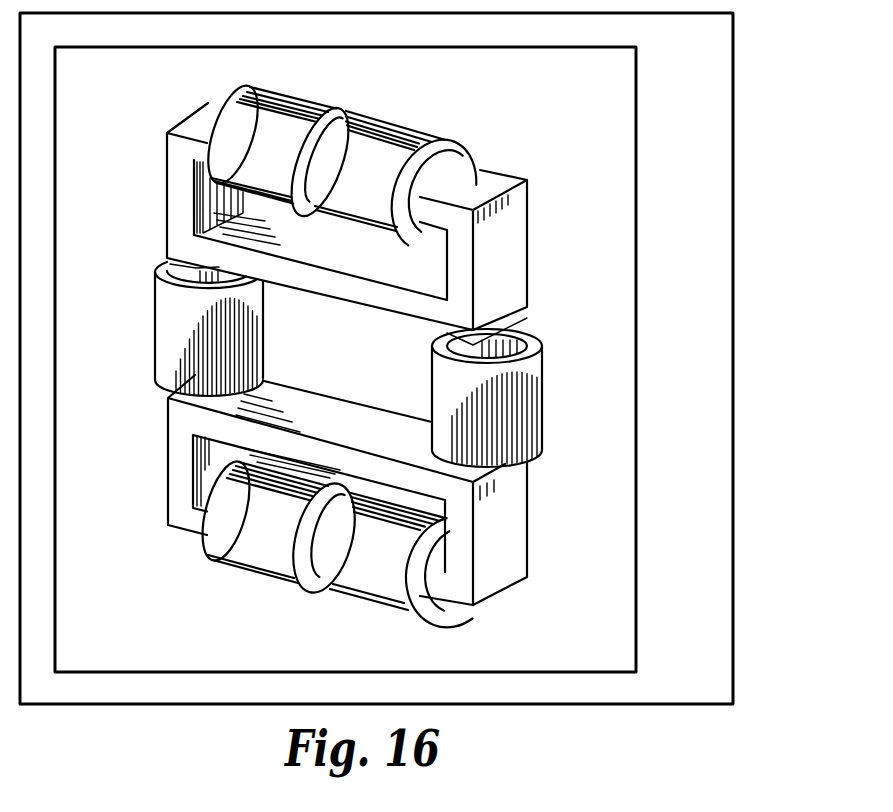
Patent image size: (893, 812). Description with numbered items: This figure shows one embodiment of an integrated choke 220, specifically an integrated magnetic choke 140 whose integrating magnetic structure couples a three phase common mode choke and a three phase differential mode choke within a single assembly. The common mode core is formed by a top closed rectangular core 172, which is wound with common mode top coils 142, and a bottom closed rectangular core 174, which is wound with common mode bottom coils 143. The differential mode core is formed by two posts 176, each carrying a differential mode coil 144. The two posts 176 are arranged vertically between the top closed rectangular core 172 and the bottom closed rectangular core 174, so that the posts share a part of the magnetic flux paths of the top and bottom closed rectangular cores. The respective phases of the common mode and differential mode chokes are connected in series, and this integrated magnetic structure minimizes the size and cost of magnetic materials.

The integrated choke 220 is at (708, 173).
The integrated magnetic choke 140 is at (620, 97).
The top closed rectangular core 172 is at (173, 168).
The common mode top coils 142 is at (403, 165).
The posts 176 is at (156, 272).
The differential mode coil 144 is at (540, 365).
The bottom closed rectangular core 174 is at (181, 434).
The common mode bottom coils 143 is at (449, 617).